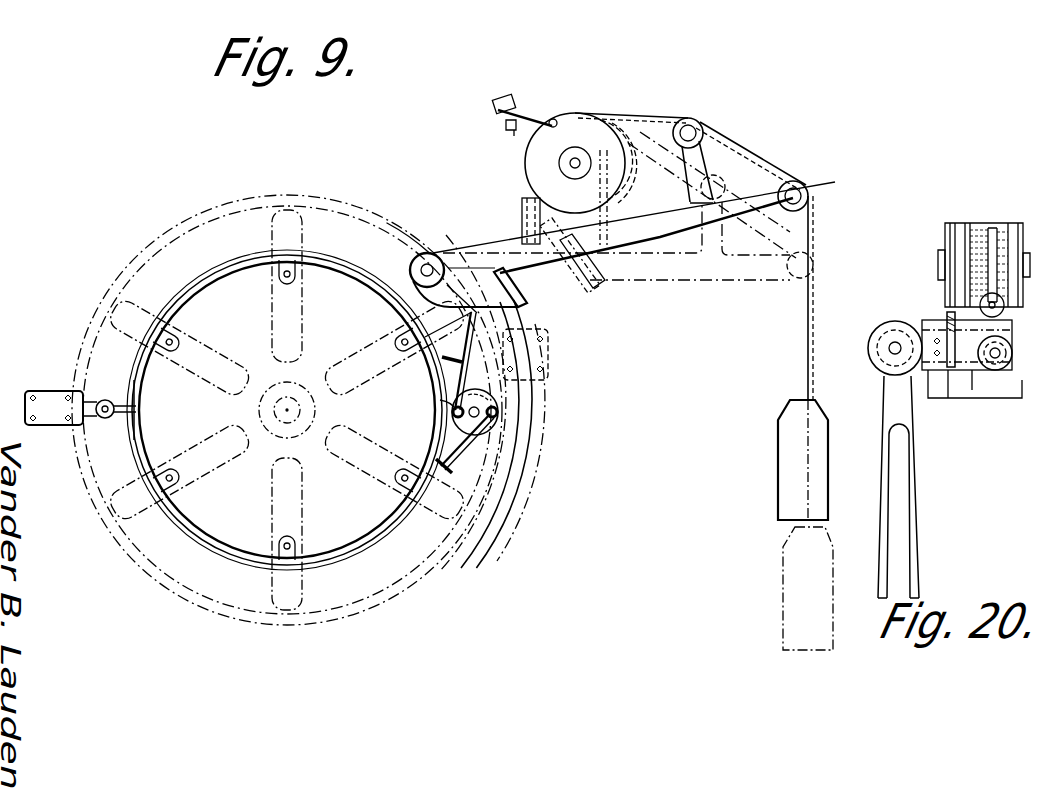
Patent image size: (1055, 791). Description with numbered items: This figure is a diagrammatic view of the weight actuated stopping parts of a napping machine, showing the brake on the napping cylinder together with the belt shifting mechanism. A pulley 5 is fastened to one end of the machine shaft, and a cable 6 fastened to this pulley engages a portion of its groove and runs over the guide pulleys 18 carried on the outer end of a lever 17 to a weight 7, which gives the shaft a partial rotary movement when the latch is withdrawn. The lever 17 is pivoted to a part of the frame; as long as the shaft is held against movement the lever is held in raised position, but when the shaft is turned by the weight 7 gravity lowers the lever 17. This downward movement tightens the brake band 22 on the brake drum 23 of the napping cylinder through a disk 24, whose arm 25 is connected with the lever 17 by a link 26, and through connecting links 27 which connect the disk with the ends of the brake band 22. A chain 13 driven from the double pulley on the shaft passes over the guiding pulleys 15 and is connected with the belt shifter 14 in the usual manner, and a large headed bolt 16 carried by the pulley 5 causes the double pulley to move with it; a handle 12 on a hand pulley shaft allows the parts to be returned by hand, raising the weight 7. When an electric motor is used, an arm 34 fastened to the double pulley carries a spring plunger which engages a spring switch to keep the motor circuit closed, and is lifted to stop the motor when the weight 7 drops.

In FIG. 9, the pulley 5 is at (581, 163).
In FIG. 9, the cable 6 is at (813, 355).
In FIG. 9, the weight 7 is at (828, 478).
In FIG. 9, the handle 12 is at (640, 108).
In FIG. 9, the chain 13 is at (560, 290).
In FIG. 20, the chain 13 is at (964, 390).
In FIG. 9, the belt shifter 14 is at (530, 448).
In FIG. 20, the belt shifter 14 is at (918, 445).
In FIG. 9, the guiding pulleys 15 is at (522, 212).
In FIG. 20, the guiding pulleys 15 is at (884, 340).
In FIG. 20, the large headed bolt 16 is at (955, 243).
In FIG. 9, the lever 17 is at (765, 188).
In FIG. 20, the lever 17 is at (946, 314).
In FIG. 9, the guide pulleys 18 is at (700, 122).
In FIG. 9, the brake band 22 is at (243, 258).
In FIG. 9, the brake drum 23 is at (224, 288).
In FIG. 9, the disk 24 is at (498, 392).
In FIG. 9, the arm 25 is at (440, 400).
In FIG. 9, the link 26 is at (462, 361).
In FIG. 9, the connecting links 27 is at (465, 448).
In FIG. 9, the arm 34 is at (536, 118).